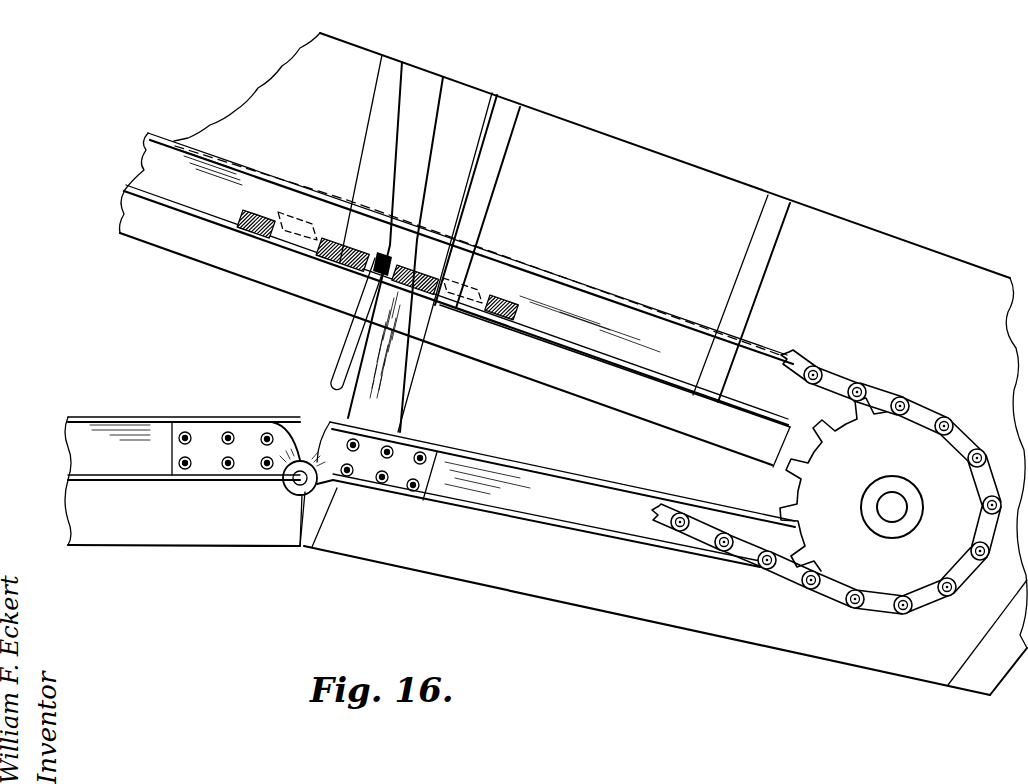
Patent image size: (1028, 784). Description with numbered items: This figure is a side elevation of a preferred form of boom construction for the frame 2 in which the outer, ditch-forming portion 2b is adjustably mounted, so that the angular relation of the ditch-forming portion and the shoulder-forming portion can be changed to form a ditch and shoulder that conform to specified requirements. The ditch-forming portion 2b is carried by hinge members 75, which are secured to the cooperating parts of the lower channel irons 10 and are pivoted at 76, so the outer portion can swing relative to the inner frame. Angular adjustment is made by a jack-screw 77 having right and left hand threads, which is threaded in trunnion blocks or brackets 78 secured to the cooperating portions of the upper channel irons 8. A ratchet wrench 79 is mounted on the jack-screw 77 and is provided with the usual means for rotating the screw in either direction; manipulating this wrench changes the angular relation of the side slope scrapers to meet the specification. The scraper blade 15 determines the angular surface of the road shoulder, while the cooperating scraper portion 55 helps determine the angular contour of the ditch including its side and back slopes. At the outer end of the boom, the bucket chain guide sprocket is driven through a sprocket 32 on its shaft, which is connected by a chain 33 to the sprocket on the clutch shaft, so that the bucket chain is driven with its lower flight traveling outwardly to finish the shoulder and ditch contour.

The boom frame 2 is at (205, 271).
The ditch-forming portion 2b is at (703, 163).
The upper channel irons 8 is at (150, 160).
The lower channel irons 10 is at (82, 436).
The scraper blade 15 is at (187, 533).
The sprocket 32 is at (832, 487).
The chain 33 is at (848, 392).
The scraper portion 55 is at (645, 615).
The hinge members 75 is at (323, 482).
The pivot 76 is at (299, 482).
The jack-screw 77 is at (517, 283).
The trunnion blocks 78 is at (298, 212).
The ratchet wrench 79 is at (343, 348).